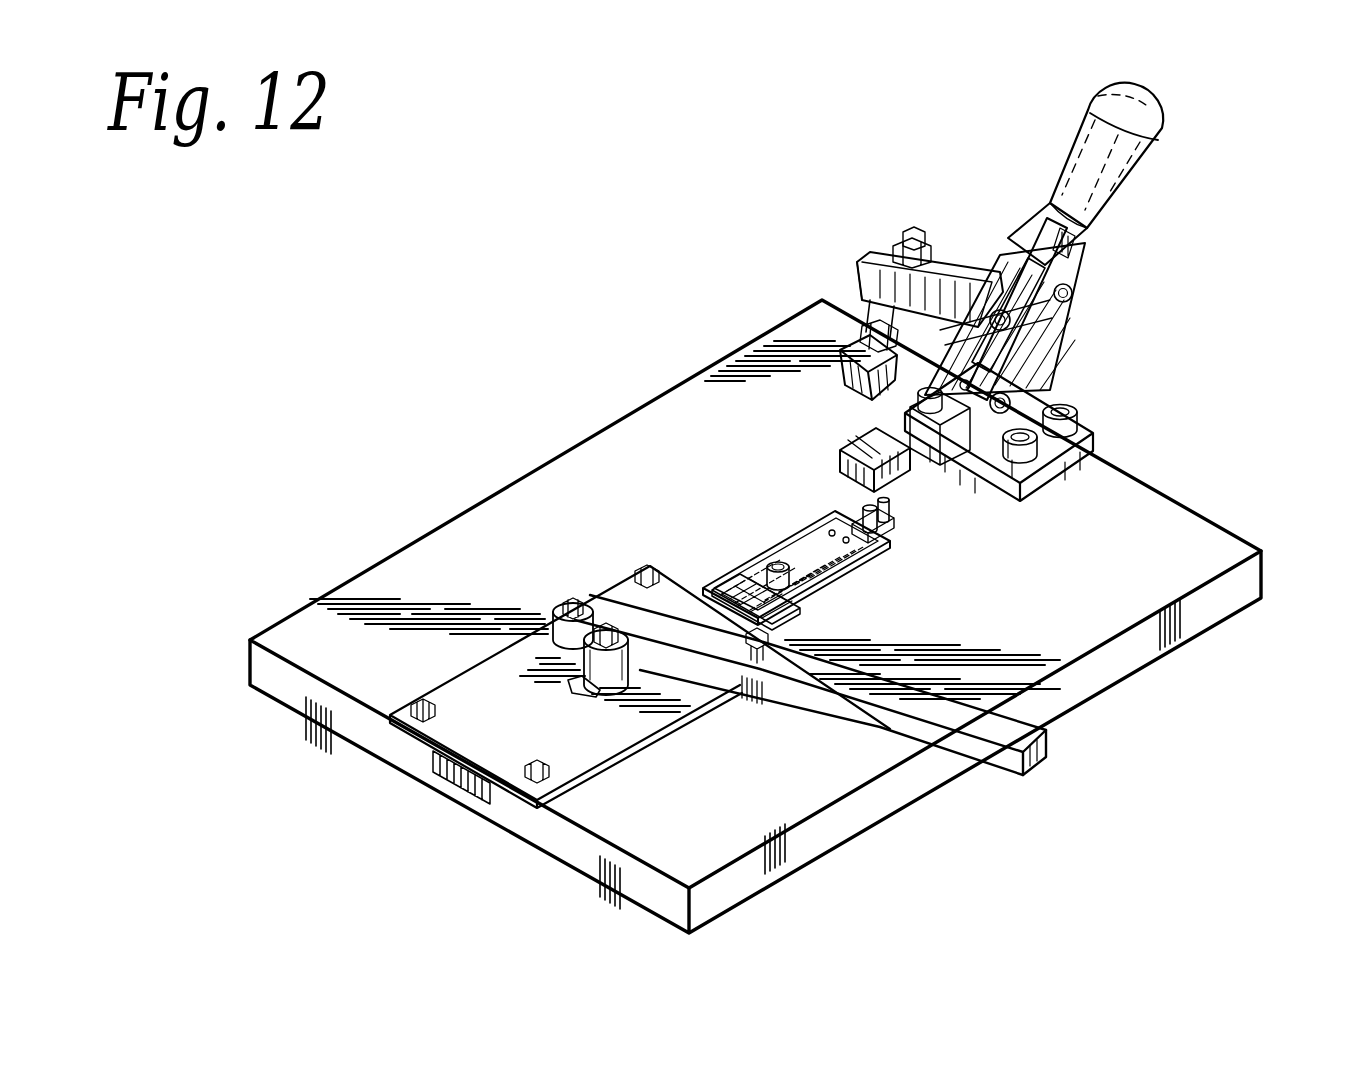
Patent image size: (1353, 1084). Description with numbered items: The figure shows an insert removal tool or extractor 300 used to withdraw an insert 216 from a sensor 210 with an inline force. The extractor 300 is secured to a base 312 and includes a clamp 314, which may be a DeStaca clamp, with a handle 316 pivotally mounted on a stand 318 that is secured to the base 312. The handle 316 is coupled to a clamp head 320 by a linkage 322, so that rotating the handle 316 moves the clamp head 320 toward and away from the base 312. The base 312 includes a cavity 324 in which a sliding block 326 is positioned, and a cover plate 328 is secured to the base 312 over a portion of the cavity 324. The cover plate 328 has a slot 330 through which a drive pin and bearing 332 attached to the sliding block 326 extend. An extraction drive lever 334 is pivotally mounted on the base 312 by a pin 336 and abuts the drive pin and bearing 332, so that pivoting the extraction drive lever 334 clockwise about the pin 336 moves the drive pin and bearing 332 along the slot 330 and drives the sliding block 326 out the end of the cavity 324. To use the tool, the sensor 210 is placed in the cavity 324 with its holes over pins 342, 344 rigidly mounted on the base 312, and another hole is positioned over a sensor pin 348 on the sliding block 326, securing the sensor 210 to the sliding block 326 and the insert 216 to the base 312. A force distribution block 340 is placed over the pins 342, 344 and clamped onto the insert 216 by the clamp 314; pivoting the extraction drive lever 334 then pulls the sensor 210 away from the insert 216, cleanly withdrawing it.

The insert removal tool or extractor 300 is at (694, 290).
The base 312 is at (488, 487).
The clamp 314 is at (978, 292).
The handle 316 is at (1132, 180).
The stand 318 is at (1095, 388).
The clamp head 320 is at (838, 397).
The linkage 322 is at (973, 250).
The cavity 324 is at (740, 585).
The sliding block 326 is at (476, 797).
The cover plate 328 is at (460, 692).
The slot 330 is at (580, 690).
The drive pin and bearing 332 is at (625, 668).
The extraction drive lever 334 is at (790, 702).
The pin 336 is at (575, 603).
The force distribution block 340 is at (885, 468).
The pin 342 is at (890, 510).
The insert 216 is at (888, 520).
The pin 344 is at (880, 532).
The sensor pin 348 is at (780, 560).
The sensor 210 is at (830, 572).